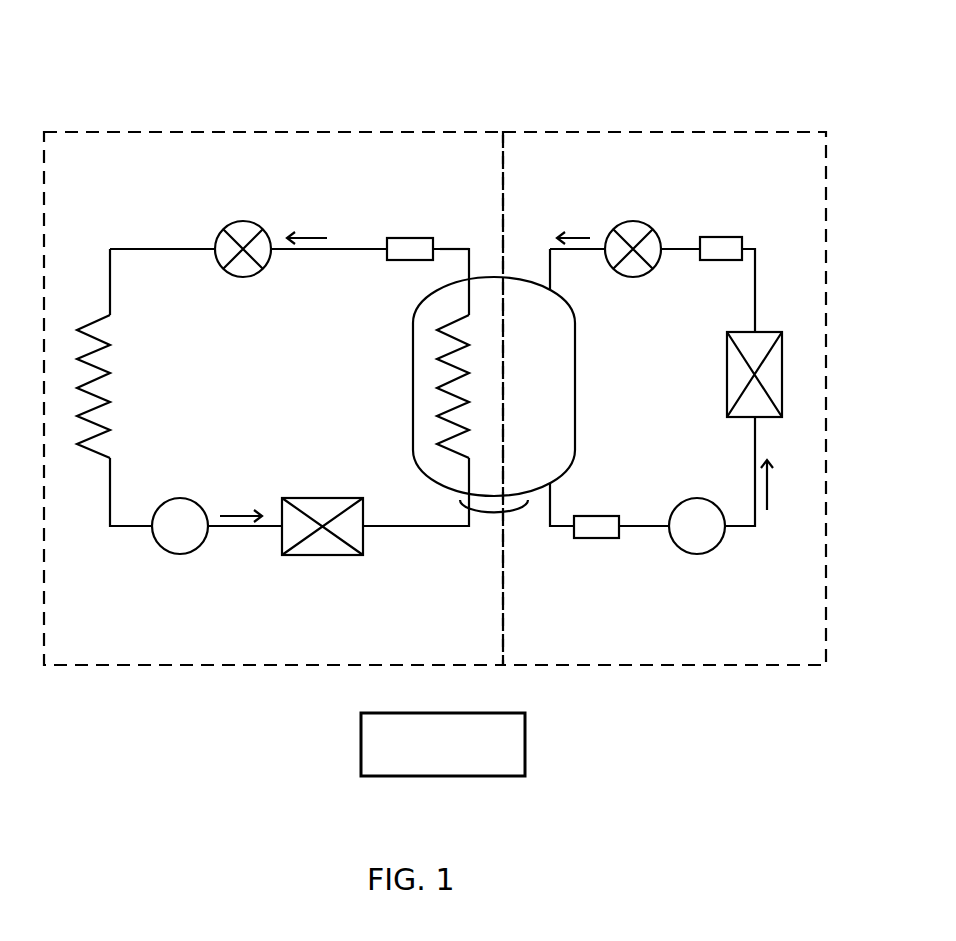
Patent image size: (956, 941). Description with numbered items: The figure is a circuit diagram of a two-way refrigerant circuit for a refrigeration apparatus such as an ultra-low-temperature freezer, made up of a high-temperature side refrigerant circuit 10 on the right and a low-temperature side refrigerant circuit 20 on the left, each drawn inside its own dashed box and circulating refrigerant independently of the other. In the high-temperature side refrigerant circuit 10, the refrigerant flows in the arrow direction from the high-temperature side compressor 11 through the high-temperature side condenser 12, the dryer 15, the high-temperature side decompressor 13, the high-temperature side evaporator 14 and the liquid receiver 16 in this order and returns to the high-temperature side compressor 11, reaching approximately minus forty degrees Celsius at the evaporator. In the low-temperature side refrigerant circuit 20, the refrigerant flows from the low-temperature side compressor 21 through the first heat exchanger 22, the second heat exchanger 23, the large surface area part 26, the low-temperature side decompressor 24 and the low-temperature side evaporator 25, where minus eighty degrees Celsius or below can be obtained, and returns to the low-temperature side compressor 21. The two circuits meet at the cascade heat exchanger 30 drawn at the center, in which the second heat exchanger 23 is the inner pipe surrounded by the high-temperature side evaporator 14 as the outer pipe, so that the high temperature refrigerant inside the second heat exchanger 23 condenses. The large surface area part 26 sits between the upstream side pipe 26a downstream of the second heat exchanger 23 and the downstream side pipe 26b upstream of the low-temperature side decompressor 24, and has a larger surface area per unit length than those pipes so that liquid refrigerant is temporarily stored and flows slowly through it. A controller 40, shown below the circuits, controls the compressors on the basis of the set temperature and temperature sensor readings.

The high-temperature side refrigerant circuit 10 is at (555, 130).
The low-temperature side refrigerant circuit 20 is at (450, 130).
The high-temperature side compressor 11 is at (716, 547).
The high-temperature side condenser 12 is at (768, 332).
The high-temperature side decompressor 13 is at (633, 221).
The high-temperature side evaporator 14 is at (575, 368).
The dryer 15 is at (722, 237).
The liquid receiver 16 is at (604, 516).
The low-temperature side compressor 21 is at (200, 546).
The first heat exchanger 22 is at (308, 555).
The second heat exchanger 23 is at (440, 367).
The low-temperature side decompressor 24 is at (255, 272).
The low-temperature side evaporator 25 is at (108, 400).
The large surface area part 26 is at (405, 238).
The upstream side pipe 26a is at (464, 246).
The downstream side pipe 26b is at (358, 249).
The cascade heat exchanger 30 is at (490, 497).
The controller 40 is at (361, 743).